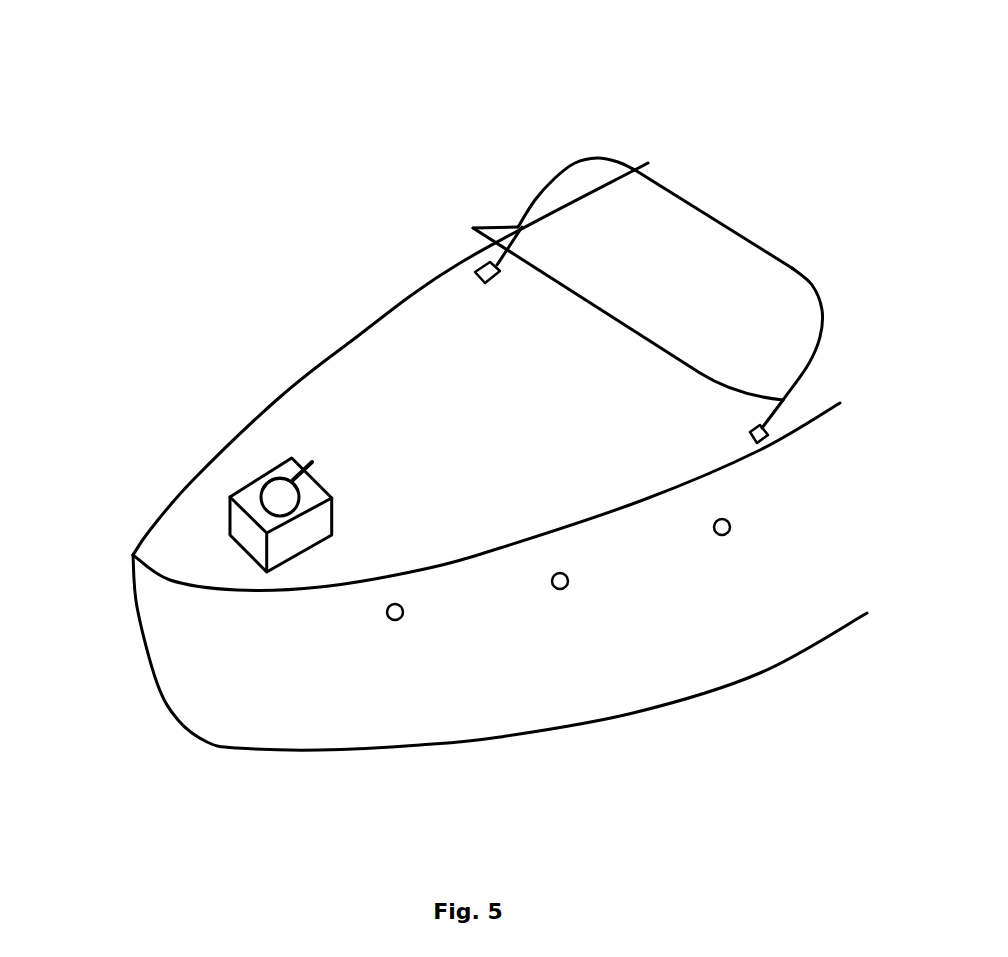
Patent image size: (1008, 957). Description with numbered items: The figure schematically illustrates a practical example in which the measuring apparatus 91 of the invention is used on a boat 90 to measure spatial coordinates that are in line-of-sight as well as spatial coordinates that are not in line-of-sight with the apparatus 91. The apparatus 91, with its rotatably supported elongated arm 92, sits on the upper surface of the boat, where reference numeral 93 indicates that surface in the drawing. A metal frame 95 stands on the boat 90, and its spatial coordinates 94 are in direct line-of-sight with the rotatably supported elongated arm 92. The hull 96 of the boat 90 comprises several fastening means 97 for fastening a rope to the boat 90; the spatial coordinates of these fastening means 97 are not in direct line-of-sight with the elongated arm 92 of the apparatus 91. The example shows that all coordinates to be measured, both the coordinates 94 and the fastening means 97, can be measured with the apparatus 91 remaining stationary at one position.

The boat 90 is at (202, 108).
The apparatus 91 is at (248, 489).
The rotatably supported elongated arm 92 is at (310, 460).
The upper hull surface 93 is at (407, 403).
The spatial coordinates 94 is at (473, 227).
The metal frame 95 is at (703, 212).
The hull 96 is at (280, 670).
The fastening means 97 is at (717, 537).